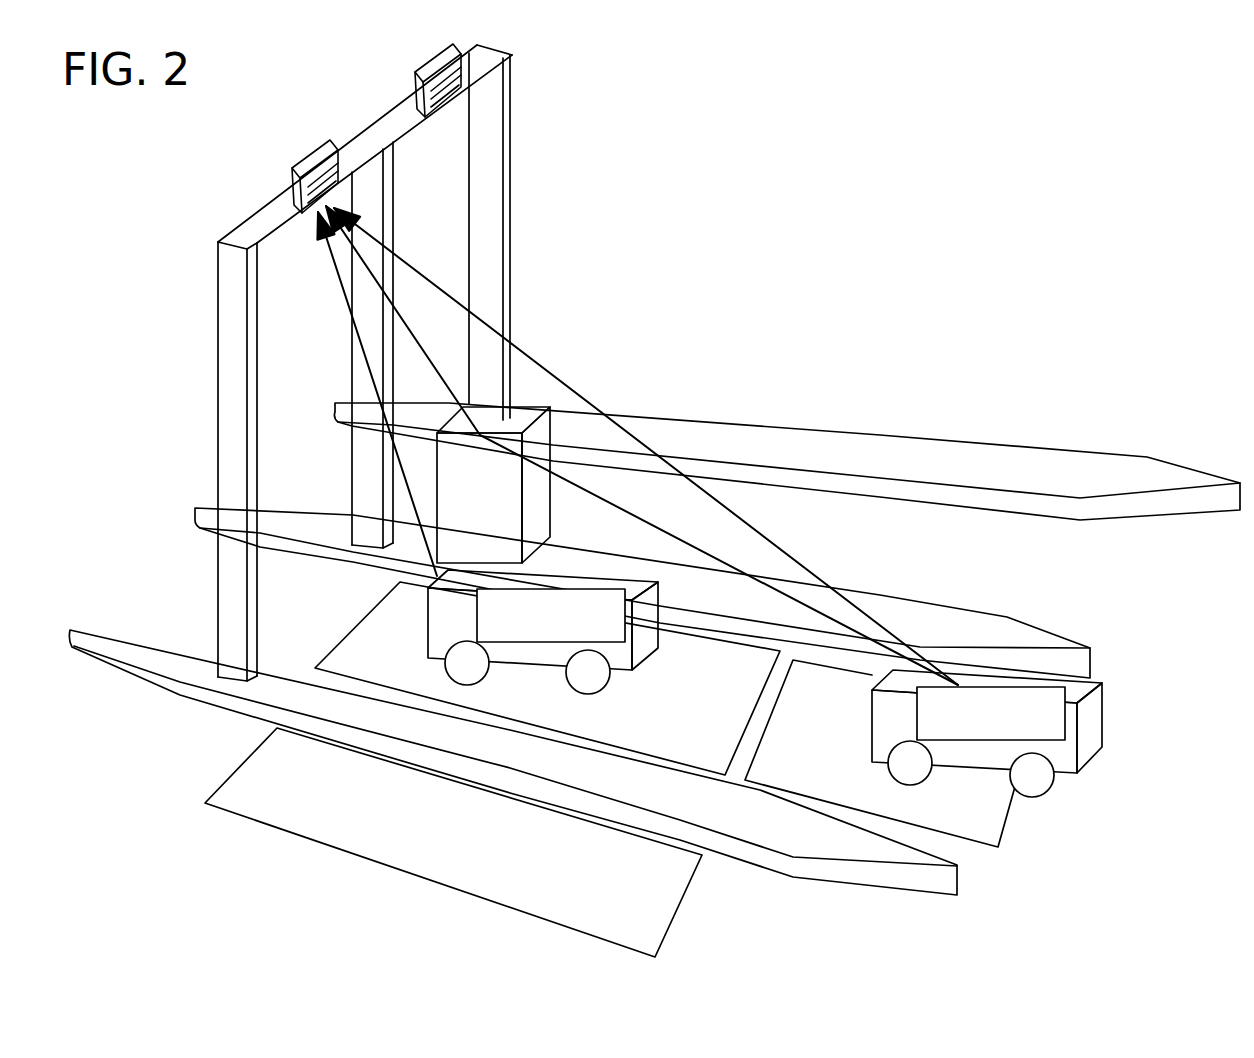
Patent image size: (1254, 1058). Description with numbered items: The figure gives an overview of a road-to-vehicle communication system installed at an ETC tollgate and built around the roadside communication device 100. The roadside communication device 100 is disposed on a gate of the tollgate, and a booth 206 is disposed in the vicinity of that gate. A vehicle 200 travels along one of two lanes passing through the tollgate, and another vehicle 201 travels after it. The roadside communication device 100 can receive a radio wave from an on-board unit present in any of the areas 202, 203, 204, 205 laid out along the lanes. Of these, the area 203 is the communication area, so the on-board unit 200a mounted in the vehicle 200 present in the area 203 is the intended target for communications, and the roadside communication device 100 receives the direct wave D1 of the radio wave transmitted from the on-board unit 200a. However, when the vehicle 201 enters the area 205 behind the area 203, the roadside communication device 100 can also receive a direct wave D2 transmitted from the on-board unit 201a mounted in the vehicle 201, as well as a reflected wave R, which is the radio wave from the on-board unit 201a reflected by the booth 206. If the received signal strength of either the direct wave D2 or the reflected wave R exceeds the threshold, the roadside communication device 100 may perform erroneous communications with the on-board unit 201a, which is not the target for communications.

The roadside communication device 100 is at (319, 172).
The vehicle 200 is at (474, 632).
The on-board unit 200a is at (473, 613).
The vehicle 201 is at (1039, 771).
The on-board unit 201a is at (1067, 718).
The area 202 is at (805, 508).
The area 203 is at (355, 667).
The area 204 is at (685, 900).
The area 205 is at (988, 808).
The booth 206 is at (487, 495).
The direct wave D1 is at (403, 481).
The direct wave D2 is at (513, 343).
The reflected wave R is at (393, 302).